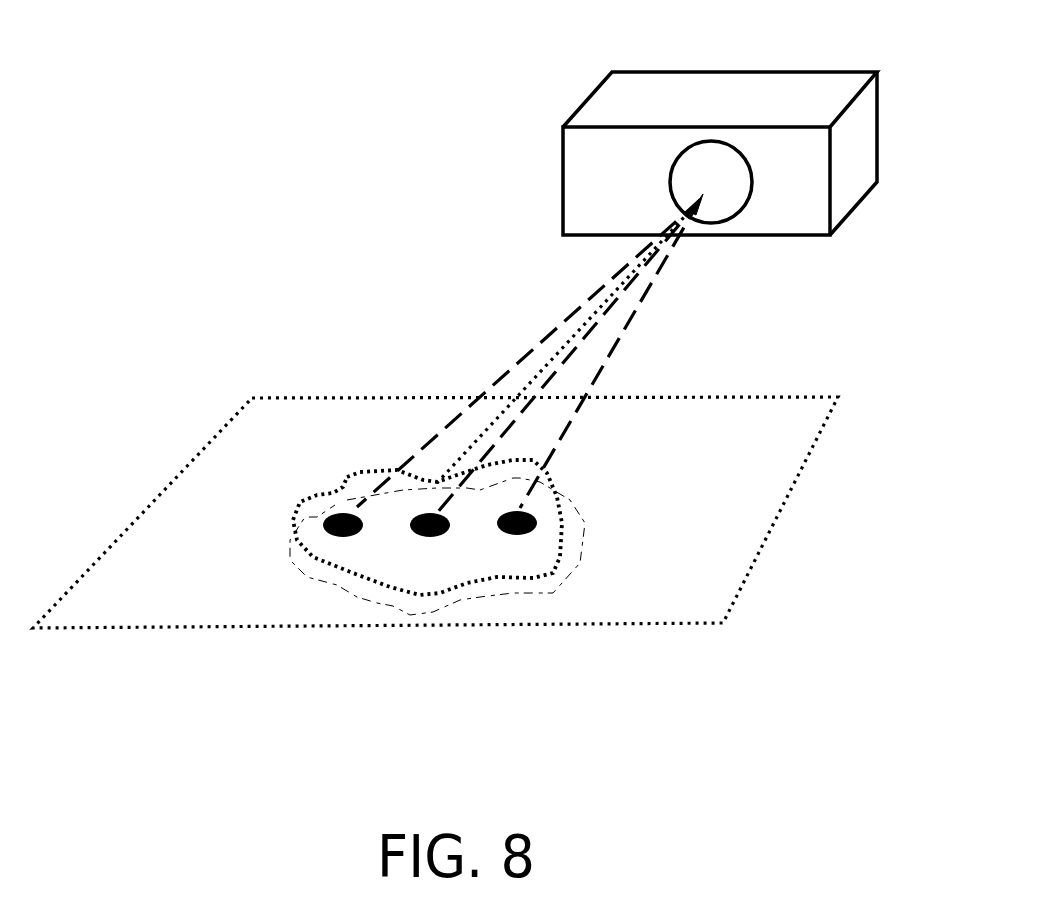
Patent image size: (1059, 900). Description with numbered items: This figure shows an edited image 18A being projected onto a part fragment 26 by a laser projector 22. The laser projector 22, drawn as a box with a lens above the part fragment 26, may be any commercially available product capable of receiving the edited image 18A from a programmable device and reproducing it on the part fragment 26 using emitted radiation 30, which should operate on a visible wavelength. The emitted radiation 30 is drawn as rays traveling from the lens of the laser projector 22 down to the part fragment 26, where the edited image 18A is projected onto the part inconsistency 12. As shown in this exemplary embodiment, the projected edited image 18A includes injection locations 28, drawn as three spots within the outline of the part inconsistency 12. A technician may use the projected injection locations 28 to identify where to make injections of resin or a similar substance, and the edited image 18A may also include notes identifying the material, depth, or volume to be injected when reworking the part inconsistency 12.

The laser projector 22 is at (753, 71).
The emitted radiation 30 is at (637, 310).
The part fragment 26 is at (777, 520).
The part inconsistency 12 is at (560, 510).
The edited image 18A is at (375, 590).
The injection locations 28 is at (522, 537).